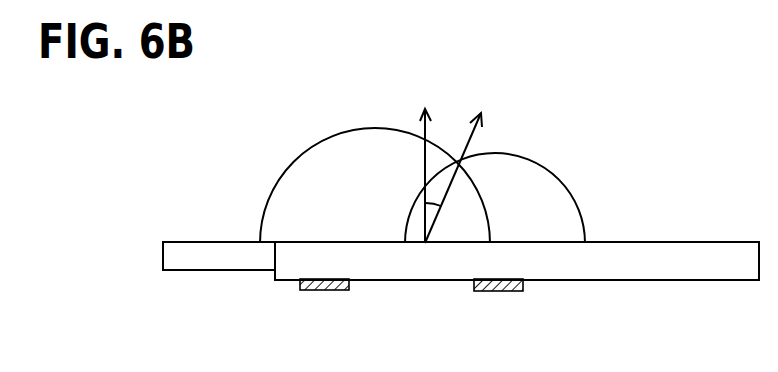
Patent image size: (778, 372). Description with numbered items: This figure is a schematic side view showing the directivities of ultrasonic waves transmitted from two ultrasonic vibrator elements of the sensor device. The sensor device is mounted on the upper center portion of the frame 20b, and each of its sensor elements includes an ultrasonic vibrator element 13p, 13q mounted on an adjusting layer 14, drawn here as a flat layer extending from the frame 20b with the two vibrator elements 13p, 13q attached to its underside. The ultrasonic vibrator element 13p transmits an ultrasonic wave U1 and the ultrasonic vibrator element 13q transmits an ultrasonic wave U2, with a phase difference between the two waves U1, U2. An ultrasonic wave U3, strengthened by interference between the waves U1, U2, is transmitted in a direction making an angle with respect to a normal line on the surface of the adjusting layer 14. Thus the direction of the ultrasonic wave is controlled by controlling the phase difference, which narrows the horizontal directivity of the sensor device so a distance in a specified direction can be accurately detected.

The adjusting layer 14 is at (634, 265).
The frame 20b is at (207, 263).
The ultrasonic vibrator element 13p is at (323, 292).
The ultrasonic vibrator element 13q is at (499, 293).
The ultrasonic wave U1 is at (298, 157).
The ultrasonic wave U2 is at (545, 170).
The ultrasonic wave U3 is at (464, 163).